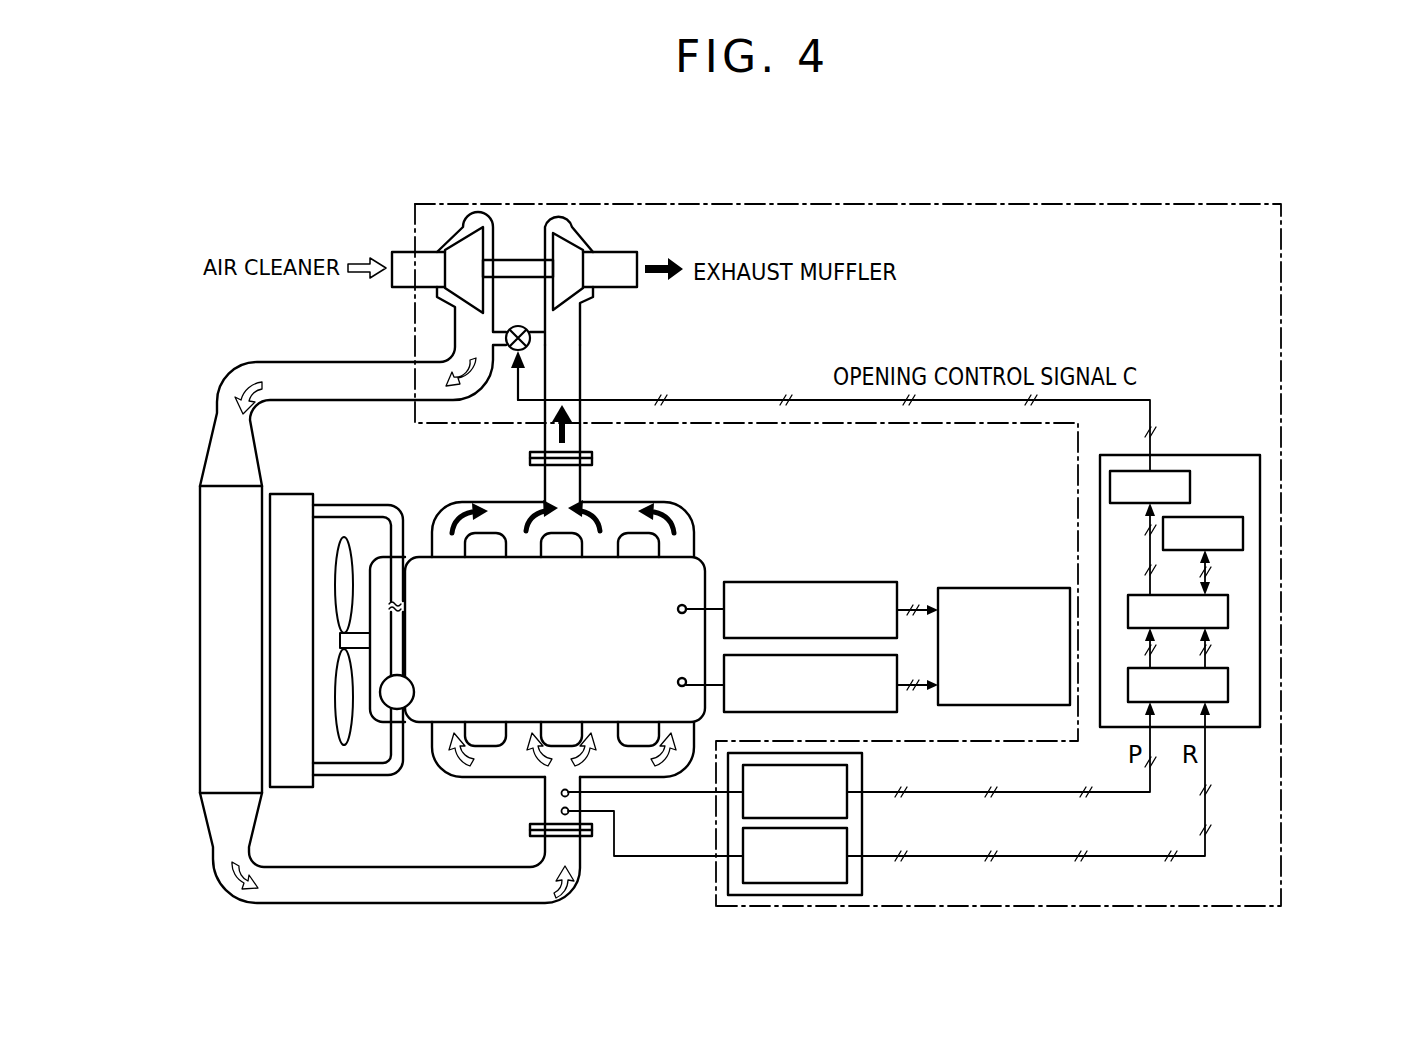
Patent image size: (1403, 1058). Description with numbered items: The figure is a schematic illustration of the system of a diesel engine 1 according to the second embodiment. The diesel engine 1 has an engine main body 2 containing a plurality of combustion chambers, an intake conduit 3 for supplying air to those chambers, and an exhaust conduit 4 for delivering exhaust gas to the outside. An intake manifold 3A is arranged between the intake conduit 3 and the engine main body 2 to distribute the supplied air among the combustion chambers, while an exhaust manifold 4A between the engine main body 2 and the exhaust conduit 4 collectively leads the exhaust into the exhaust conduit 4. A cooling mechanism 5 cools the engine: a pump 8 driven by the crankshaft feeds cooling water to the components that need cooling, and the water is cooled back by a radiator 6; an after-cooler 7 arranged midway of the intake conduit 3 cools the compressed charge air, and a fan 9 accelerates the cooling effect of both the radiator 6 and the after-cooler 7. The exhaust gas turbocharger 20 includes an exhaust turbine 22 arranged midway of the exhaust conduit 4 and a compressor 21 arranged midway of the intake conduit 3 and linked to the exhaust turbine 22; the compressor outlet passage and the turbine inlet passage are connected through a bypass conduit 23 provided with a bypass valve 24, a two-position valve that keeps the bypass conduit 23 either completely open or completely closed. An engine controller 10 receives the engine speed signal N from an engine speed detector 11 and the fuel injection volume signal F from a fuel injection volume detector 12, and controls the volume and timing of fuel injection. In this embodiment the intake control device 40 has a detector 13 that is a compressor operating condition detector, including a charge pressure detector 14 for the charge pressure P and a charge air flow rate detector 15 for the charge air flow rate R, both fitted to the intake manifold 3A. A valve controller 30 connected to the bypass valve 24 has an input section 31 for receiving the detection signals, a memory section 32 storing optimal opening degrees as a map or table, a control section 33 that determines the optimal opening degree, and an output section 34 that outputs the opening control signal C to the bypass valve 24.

The diesel engine 1 is at (1103, 236).
The engine main body 2 is at (706, 561).
The intake conduit 3 is at (390, 866).
The intake manifold 3A is at (497, 778).
The exhaust conduit 4 is at (592, 455).
The exhaust manifold 4A is at (492, 501).
The cooling mechanism 5 is at (357, 472).
The radiator 6 is at (283, 788).
The after-cooler 7 is at (200, 636).
The pump 8 is at (415, 690).
The fan 9 is at (347, 562).
The engine controller 10 is at (988, 587).
The engine speed detector 11 is at (840, 581).
The fuel injection volume detector 12 is at (897, 708).
The detector 13 is at (833, 827).
The charge pressure detector 14 is at (848, 778).
The charge air flow rate detector 15 is at (848, 838).
The exhaust gas turbocharger 20 is at (514, 234).
The compressor 21 is at (488, 216).
The exhaust turbine 22 is at (583, 255).
The bypass conduit 23 is at (530, 330).
The bypass valve 24 is at (522, 348).
The valve controller 30 is at (1179, 570).
The input section 31 is at (1228, 685).
The memory section 32 is at (1243, 530).
The control section 33 is at (1228, 612).
The output section 34 is at (1170, 470).
The intake control device 40 is at (853, 202).